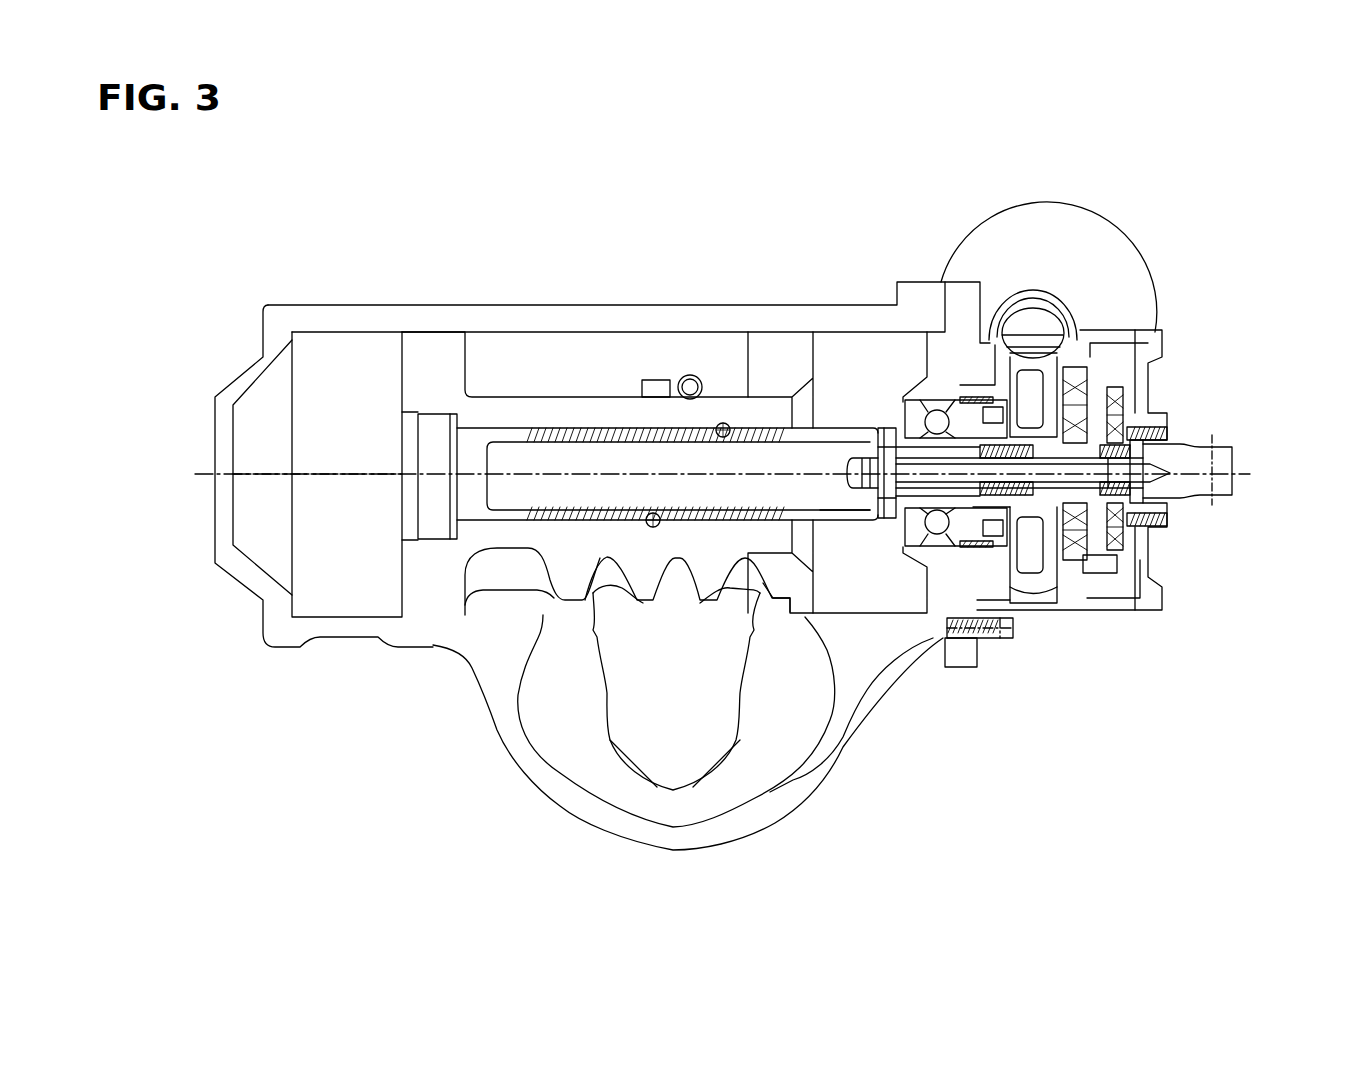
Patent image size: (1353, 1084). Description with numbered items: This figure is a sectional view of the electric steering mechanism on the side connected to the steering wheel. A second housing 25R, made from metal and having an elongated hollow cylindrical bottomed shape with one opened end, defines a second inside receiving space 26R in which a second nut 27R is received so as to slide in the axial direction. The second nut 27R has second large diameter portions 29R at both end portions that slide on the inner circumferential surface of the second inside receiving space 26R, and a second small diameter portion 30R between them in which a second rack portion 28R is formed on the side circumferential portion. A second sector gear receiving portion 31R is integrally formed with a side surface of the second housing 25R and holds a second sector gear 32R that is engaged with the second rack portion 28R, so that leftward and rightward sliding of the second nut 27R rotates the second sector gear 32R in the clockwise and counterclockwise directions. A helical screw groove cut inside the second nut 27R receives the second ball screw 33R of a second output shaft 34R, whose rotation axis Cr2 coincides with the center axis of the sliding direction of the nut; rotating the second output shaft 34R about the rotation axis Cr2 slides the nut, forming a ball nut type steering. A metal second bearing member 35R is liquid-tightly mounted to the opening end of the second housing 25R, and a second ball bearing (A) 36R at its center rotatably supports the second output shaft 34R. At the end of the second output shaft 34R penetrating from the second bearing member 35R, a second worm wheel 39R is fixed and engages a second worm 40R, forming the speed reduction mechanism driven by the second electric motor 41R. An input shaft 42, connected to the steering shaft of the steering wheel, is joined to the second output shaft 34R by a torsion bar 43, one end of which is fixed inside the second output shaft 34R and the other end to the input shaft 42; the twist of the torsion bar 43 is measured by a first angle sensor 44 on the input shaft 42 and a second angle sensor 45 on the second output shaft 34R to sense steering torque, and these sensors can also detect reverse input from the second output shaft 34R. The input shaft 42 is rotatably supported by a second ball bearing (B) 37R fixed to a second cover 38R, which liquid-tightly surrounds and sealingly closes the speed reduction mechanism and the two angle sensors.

The second housing 25R is at (659, 313).
The second inside receiving space 26R is at (346, 348).
The second nut 27R is at (501, 384).
The second rack portion 28R is at (560, 568).
The second large diameter portions 29R is at (432, 347).
The second small diameter portion 30R is at (580, 398).
The second sector gear receiving portion 31R is at (680, 842).
The second sector gear 32R is at (613, 717).
The second ball screw 33R is at (724, 424).
The second output shaft 34R is at (833, 493).
The second bearing member 35R is at (960, 662).
The second ball bearing (A) 36R is at (928, 398).
The second ball bearing (B) 37R is at (1167, 510).
The second cover 38R is at (1150, 563).
The second worm wheel 39R is at (1012, 375).
The second worm 40R is at (1040, 323).
The second electric motor 41R is at (1068, 222).
The input shaft 42 is at (1235, 456).
The torsion bar 43 is at (1032, 500).
The first angle sensor 44 is at (1113, 552).
The second angle sensor 45 is at (1077, 552).
The rotation axis Cr2 is at (347, 480).